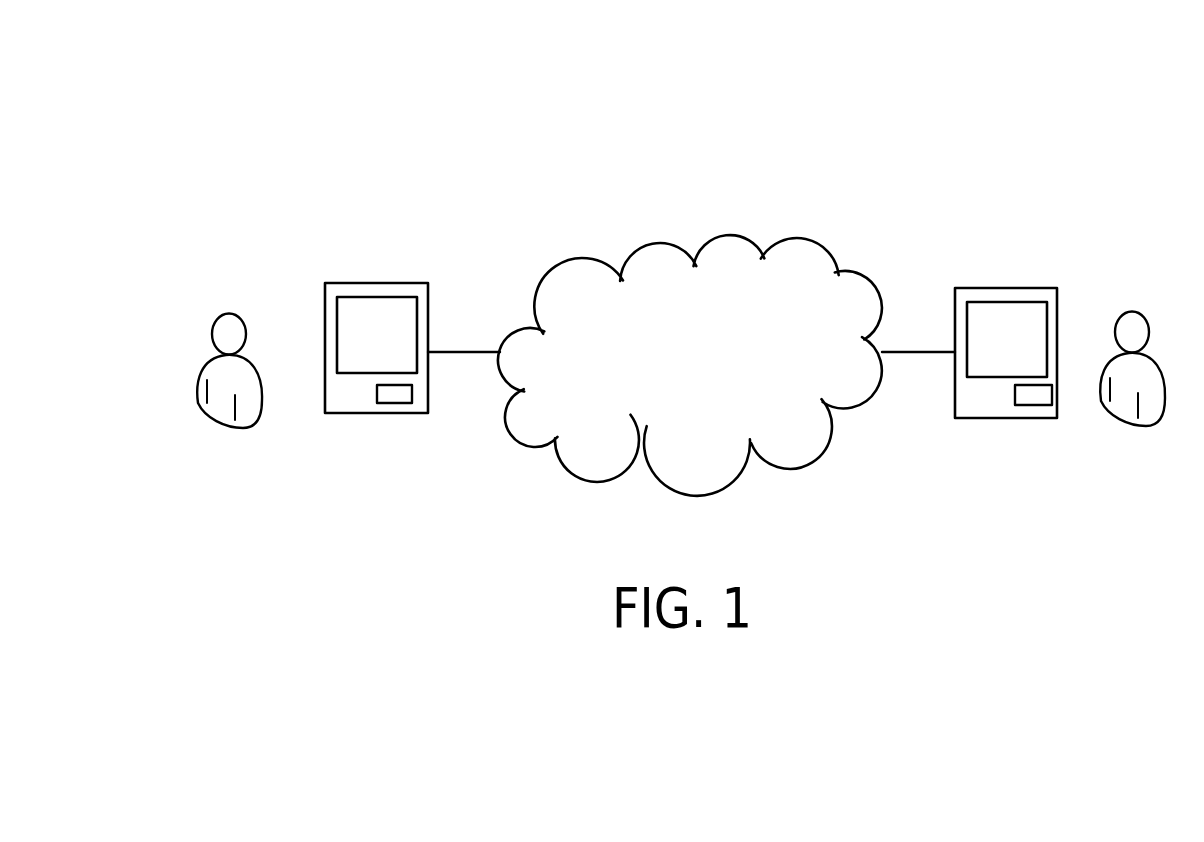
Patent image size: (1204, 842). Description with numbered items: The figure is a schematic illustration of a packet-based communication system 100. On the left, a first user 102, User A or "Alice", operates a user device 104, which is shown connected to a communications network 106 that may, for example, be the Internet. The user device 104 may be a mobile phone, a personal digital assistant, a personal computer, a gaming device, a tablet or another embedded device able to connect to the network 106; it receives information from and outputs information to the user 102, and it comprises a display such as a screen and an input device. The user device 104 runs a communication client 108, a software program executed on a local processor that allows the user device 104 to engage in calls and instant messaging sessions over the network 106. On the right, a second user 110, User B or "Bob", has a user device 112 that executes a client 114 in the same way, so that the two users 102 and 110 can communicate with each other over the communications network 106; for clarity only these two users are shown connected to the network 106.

The packet-based communication system 100 is at (1006, 123).
The first user 102 is at (227, 313).
The user device 104 is at (382, 283).
The communications network 106 is at (797, 247).
The communication client 108 is at (400, 400).
The second user 110 is at (1130, 309).
The user device 112 is at (977, 288).
The client 114 is at (1038, 400).